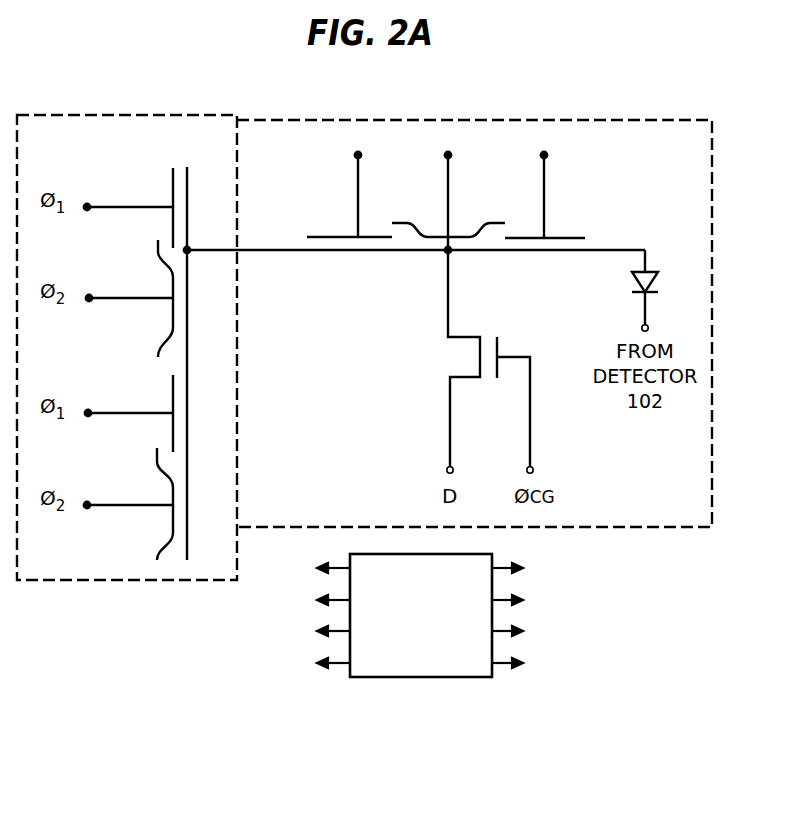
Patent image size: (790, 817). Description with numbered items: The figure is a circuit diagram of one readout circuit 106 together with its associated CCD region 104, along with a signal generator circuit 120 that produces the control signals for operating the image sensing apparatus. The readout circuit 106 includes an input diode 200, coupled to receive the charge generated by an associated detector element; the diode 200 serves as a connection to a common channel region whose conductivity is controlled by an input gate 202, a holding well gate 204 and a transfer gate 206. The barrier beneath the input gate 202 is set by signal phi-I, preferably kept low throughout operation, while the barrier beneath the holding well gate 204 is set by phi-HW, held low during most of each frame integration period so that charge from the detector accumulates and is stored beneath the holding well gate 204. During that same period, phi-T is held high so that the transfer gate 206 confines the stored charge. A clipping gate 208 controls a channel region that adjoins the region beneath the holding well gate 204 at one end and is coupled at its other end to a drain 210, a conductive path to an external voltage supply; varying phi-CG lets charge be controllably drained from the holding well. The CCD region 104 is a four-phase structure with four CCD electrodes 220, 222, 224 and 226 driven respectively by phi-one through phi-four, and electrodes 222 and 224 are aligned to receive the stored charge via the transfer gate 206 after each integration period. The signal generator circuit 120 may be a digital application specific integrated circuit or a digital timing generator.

The CCD region 104 is at (155, 115).
The readout circuit 106 is at (420, 120).
The signal generator circuit 120 is at (393, 678).
The input diode 200 is at (653, 270).
The input gate 202 is at (563, 230).
The holding well gate 204 is at (480, 222).
The transfer gate 206 is at (343, 232).
The clipping gate 208 is at (466, 333).
The drain 210 is at (455, 467).
The CCD electrode 220 is at (173, 187).
The CCD electrode 222 is at (161, 268).
The CCD electrode 224 is at (173, 390).
The CCD electrode 226 is at (161, 475).